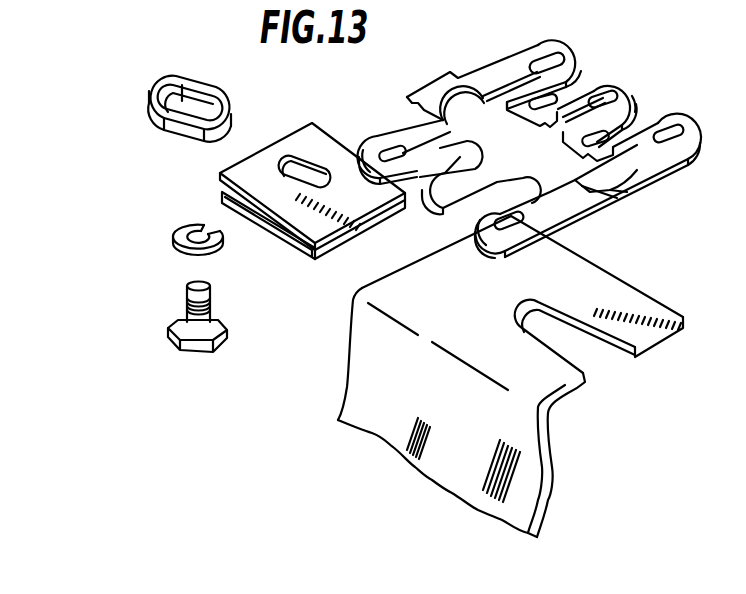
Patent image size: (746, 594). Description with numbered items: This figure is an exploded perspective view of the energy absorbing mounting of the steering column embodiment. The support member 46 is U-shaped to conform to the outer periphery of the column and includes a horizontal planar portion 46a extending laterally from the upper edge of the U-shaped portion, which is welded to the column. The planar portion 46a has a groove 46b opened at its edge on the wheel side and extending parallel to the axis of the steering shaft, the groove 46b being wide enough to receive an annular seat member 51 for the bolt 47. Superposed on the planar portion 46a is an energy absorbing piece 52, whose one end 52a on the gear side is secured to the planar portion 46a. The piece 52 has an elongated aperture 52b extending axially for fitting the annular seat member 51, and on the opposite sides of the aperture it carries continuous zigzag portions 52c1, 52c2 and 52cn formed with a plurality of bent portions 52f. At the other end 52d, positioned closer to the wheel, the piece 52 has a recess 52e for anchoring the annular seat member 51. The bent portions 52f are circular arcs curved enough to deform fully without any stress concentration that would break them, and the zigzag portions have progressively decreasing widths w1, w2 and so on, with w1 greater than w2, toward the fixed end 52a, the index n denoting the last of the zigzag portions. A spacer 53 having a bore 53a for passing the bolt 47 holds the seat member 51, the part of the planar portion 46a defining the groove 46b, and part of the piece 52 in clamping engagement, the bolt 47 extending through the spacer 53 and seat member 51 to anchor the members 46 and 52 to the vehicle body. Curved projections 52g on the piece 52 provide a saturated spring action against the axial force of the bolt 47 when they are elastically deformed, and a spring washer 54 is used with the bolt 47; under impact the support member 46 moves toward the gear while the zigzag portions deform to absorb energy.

The support member 46 is at (499, 376).
The planar portion 46a is at (615, 290).
The groove 46b is at (565, 360).
The bolt 47 is at (227, 335).
The annular seat member 51 is at (197, 86).
The energy absorbing piece 52 is at (527, 146).
The one end of absorbing piece 52a is at (428, 93).
The elongated aperture 52b is at (586, 192).
The zigzag portion 52c1 is at (663, 162).
The zigzag portion 52c2 is at (463, 208).
The zigzag portion 52cn is at (392, 135).
The other end of absorbing piece 52d is at (627, 192).
The recess 52e is at (617, 198).
The bent portion 52f is at (378, 165).
The curved projection 52g is at (531, 183).
The spacer 53 is at (312, 200).
The bore 53a is at (317, 154).
The spring washer 54 is at (174, 240).
The number of zigzag portions n is at (566, 40).
The width of first zigzag portion w1 is at (688, 119).
The width of second zigzag portion w2 is at (632, 79).